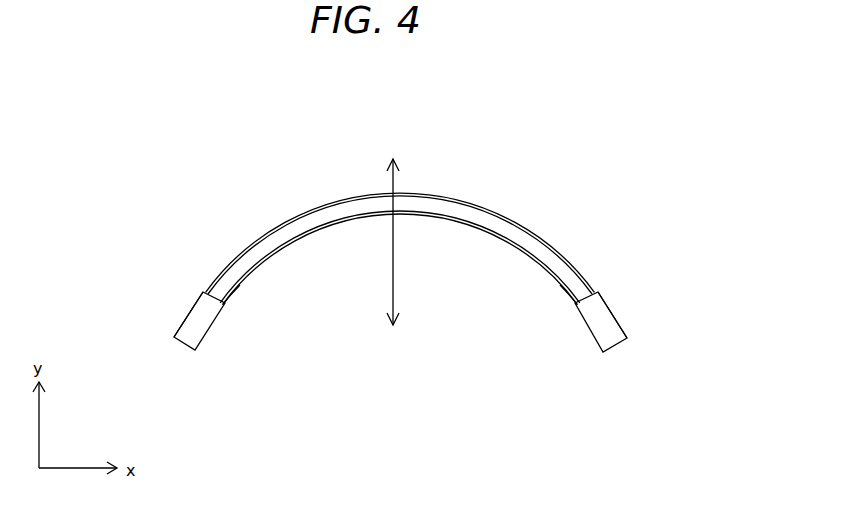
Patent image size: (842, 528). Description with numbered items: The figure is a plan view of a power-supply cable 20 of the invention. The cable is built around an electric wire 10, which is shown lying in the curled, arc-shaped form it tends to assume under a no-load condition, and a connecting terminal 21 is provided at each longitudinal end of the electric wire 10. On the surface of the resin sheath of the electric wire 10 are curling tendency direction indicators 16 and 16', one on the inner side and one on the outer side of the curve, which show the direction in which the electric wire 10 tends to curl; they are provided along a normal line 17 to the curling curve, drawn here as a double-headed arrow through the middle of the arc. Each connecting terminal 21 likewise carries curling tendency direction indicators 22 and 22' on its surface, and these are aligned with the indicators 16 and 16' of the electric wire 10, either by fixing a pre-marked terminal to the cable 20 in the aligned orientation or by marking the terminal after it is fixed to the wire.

The electric wire 10 is at (448, 212).
The curling tendency direction indicator 16 is at (400, 277).
The curling tendency direction indicator 16' is at (400, 233).
The normal line 17 is at (395, 295).
The power-supply cable 20 is at (472, 158).
The connecting terminal 21 is at (200, 323).
The curling tendency direction indicator 22 is at (407, 349).
The curling tendency direction indicator 22' is at (428, 284).